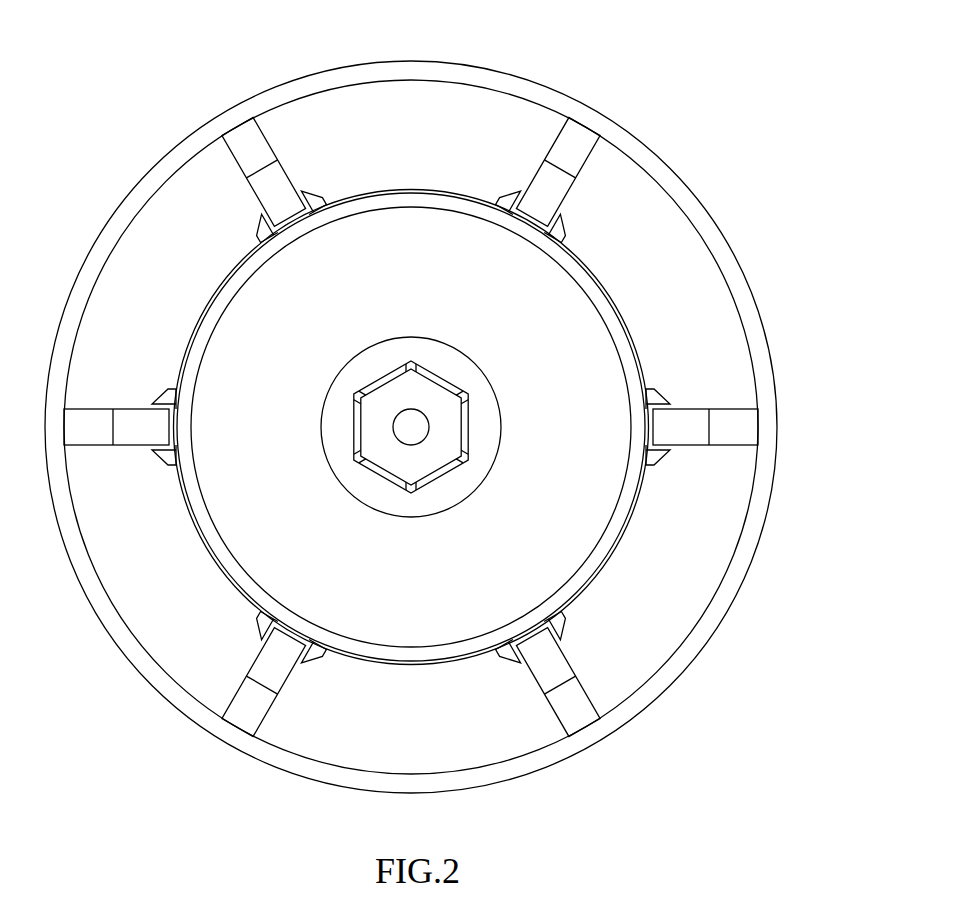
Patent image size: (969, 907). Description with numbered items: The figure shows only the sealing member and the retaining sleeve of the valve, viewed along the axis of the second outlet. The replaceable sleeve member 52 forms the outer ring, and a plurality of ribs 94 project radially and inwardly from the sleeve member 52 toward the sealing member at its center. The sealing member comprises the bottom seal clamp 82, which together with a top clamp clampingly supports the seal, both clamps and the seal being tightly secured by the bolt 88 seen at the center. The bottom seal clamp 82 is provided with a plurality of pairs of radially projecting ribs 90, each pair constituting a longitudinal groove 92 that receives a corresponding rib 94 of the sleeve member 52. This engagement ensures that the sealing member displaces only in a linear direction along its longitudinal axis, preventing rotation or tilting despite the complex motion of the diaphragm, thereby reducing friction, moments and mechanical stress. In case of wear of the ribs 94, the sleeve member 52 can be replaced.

The replaceable sleeve member 52 is at (290, 87).
The bottom seal clamp 82 is at (577, 533).
The bolt 88 is at (388, 455).
The radially projecting ribs 90 is at (560, 627).
The longitudinal groove 92 is at (652, 432).
The rib 94 is at (578, 143).